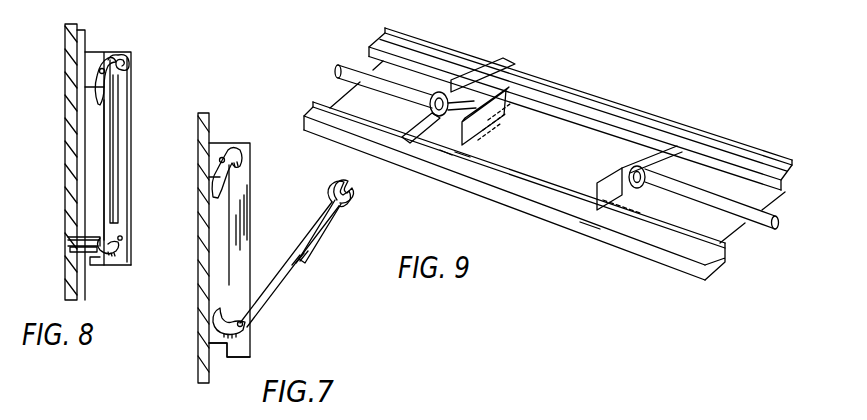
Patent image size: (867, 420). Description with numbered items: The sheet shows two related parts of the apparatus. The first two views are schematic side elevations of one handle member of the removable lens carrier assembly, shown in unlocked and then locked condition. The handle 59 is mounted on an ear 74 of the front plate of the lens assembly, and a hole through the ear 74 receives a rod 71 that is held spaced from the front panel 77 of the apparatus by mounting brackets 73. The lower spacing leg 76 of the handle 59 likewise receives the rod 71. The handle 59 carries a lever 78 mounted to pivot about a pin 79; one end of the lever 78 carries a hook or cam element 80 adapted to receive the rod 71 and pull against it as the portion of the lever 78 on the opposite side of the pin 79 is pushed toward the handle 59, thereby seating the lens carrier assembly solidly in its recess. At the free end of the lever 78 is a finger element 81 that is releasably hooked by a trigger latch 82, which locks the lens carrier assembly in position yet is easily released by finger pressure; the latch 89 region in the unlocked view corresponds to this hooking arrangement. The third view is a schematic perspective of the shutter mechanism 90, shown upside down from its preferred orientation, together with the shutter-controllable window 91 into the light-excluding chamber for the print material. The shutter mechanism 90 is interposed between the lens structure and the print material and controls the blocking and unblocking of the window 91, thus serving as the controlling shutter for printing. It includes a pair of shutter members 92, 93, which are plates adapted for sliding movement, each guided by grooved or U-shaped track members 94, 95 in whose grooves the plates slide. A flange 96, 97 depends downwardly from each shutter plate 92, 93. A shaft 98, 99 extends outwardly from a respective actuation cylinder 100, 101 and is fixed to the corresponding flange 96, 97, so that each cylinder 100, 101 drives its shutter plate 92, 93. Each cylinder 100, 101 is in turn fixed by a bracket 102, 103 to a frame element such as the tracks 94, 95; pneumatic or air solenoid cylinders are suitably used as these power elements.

In FIG. 8, the handle member 59 is at (128, 152).
In FIG. 7, the handle member 59 is at (245, 207).
In FIG. 8, the rod member 71 is at (65, 236).
In FIG. 8, the mounting bracket 73 is at (67, 238).
In FIG. 8, the ear 74 is at (72, 91).
In FIG. 7, the ear 74 is at (202, 283).
In FIG. 8, the lower spacing leg 76 is at (103, 263).
In FIG. 7, the lower spacing leg 76 is at (226, 350).
In FIG. 8, the front panel 77 is at (70, 145).
In FIG. 8, the lever 78 is at (120, 195).
In FIG. 7, the lever 78 is at (300, 253).
In FIG. 9, the lever 78 is at (306, 262).
In FIG. 8, the pin 79 is at (127, 237).
In FIG. 7, the pin 79 is at (248, 328).
In FIG. 8, the hook or cam element 80 is at (72, 247).
In FIG. 8, the finger element 81 is at (121, 58).
In FIG. 7, the finger element 81 is at (330, 190).
In FIG. 9, the finger element 81 is at (333, 190).
In FIG. 8, the trigger latch 82 is at (100, 68).
In FIG. 7, the trigger latch 82 is at (234, 150).
In FIG. 7, the latch 89 is at (232, 315).
In FIG. 9, the shutter mechanism 90 is at (713, 135).
In FIG. 9, the window 91 is at (563, 133).
In FIG. 9, the shutter member 92 is at (460, 162).
In FIG. 9, the shutter member 93 is at (707, 227).
In FIG. 9, the track member 94 is at (493, 87).
In FIG. 9, the track member 95 is at (447, 165).
In FIG. 9, the flange 96 is at (513, 100).
In FIG. 9, the flange 97 is at (637, 147).
In FIG. 9, the shaft 98 is at (468, 92).
In FIG. 9, the shaft 99 is at (585, 228).
In FIG. 9, the actuation cylinder 100 is at (356, 62).
In FIG. 9, the actuation cylinder 101 is at (767, 215).
In FIG. 9, the bracket 102 is at (417, 127).
In FIG. 9, the bracket 103 is at (605, 218).